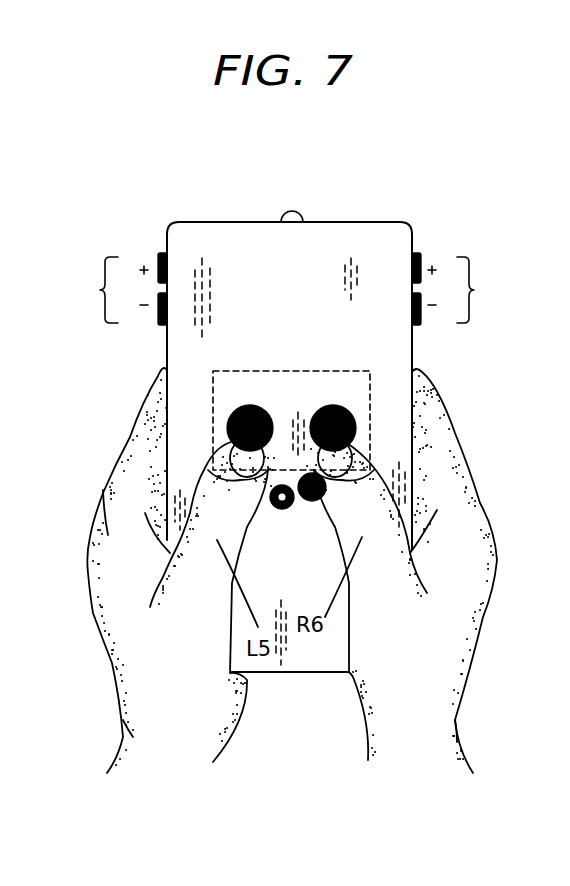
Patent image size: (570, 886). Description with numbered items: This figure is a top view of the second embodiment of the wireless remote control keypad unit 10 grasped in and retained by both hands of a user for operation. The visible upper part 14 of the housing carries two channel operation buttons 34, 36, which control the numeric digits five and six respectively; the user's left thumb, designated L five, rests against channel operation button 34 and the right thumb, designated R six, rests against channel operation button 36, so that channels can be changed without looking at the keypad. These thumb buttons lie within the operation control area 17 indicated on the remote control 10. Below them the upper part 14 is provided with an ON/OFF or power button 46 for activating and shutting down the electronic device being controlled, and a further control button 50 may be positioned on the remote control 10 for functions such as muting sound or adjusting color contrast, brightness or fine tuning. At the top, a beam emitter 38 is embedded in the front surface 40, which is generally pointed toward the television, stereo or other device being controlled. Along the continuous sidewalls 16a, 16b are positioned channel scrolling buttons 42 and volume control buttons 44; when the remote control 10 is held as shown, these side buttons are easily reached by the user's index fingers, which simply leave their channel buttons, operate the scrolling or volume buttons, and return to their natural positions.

The wireless remote control keypad unit 10 is at (160, 197).
The upper part 14 is at (305, 281).
The sidewall 16a is at (412, 350).
The sidewall 16b is at (167, 352).
The operation control area 17 is at (283, 378).
The channel operation button 34 is at (228, 422).
The channel operation button 36 is at (344, 408).
The beam emitter 38 is at (299, 212).
The front surface 40 is at (353, 222).
The channel scrolling buttons 42 is at (474, 290).
The volume control buttons 44 is at (100, 290).
The power button 46 is at (282, 509).
The control button 50 is at (310, 505).